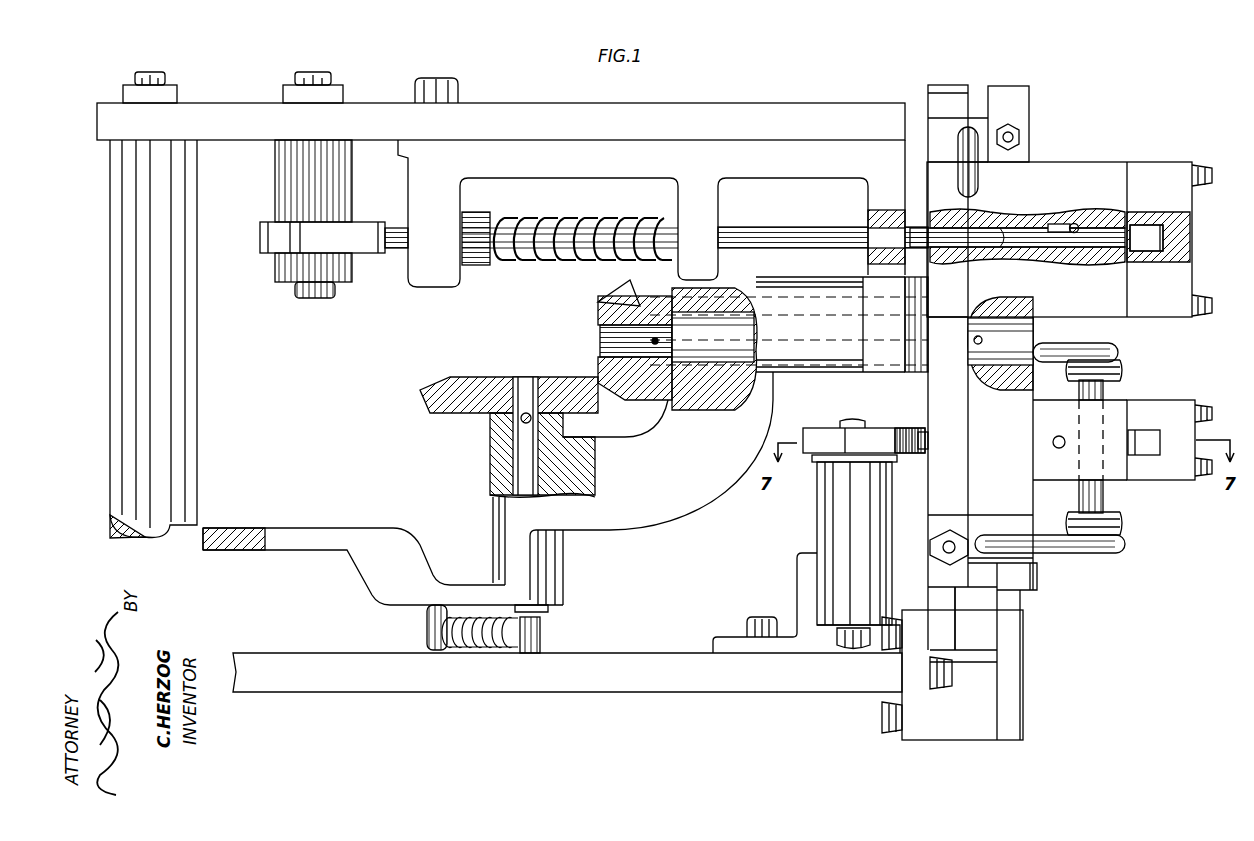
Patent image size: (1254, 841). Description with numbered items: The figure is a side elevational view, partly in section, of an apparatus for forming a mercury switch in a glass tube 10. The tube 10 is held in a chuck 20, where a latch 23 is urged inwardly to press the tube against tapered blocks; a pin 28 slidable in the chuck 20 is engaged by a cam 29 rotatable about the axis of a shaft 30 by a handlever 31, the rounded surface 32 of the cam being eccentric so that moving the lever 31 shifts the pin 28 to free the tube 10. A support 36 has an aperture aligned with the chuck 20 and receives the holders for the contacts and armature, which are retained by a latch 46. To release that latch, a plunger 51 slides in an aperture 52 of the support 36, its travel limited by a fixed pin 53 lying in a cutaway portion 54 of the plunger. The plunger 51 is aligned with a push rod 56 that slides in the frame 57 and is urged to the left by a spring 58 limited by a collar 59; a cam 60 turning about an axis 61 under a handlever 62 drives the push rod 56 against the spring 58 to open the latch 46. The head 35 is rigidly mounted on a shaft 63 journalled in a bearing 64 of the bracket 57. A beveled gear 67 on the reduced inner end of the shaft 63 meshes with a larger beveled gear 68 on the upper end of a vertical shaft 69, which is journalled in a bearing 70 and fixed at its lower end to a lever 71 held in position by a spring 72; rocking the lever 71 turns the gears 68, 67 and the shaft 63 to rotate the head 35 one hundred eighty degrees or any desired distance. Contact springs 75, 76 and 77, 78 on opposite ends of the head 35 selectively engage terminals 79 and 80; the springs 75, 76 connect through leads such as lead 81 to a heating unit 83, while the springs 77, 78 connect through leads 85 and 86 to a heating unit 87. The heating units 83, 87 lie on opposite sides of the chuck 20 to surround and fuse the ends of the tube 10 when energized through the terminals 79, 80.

The glass tube 10 is at (1108, 400).
The chuck 20 is at (1200, 383).
The latch 23 is at (1150, 456).
The pin 28 is at (925, 440).
The cam 29 is at (822, 432).
The shaft 30 is at (857, 645).
The handlever 31 is at (818, 465).
The rounded surface 32 is at (906, 430).
The head 35 is at (938, 478).
The support 36 is at (1143, 132).
The latch 46 is at (1142, 262).
The plunger 51 is at (966, 250).
The aperture 52 is at (1005, 250).
The pin 53 is at (1078, 224).
The cutaway portion 54 is at (1058, 222).
The push rod 56 is at (800, 240).
The frame 57 is at (770, 155).
The spring 58 is at (546, 225).
The collar 59 is at (478, 266).
The cam 60 is at (390, 250).
The axis 61 is at (312, 298).
The handlever 62 is at (275, 262).
The shaft 63 is at (690, 352).
The bearing 64 is at (715, 388).
The beveled gear 67 is at (614, 292).
The beveled gear 68 is at (430, 388).
The vertical shaft 69 is at (527, 380).
The bearing 70 is at (497, 477).
The lever 71 is at (345, 528).
The spring 72 is at (488, 648).
The contact spring 75 is at (958, 588).
The contact spring 76 is at (1030, 590).
The contact spring 77 is at (962, 85).
The contact spring 78 is at (1011, 86).
The terminal 79 is at (950, 627).
The terminal 80 is at (1020, 645).
The lead 81 is at (1075, 550).
The heating unit 83 is at (1123, 530).
The lead 85 is at (980, 192).
The lead 86 is at (1043, 355).
The heating unit 87 is at (1122, 372).